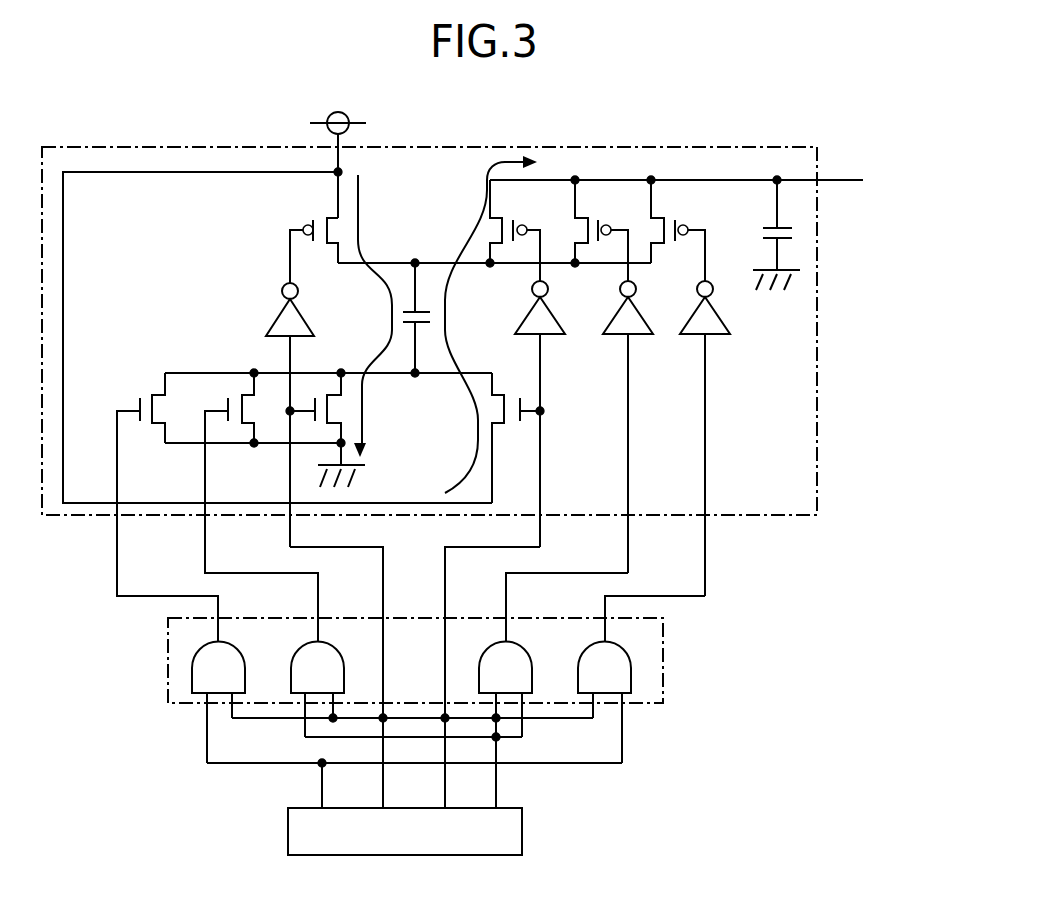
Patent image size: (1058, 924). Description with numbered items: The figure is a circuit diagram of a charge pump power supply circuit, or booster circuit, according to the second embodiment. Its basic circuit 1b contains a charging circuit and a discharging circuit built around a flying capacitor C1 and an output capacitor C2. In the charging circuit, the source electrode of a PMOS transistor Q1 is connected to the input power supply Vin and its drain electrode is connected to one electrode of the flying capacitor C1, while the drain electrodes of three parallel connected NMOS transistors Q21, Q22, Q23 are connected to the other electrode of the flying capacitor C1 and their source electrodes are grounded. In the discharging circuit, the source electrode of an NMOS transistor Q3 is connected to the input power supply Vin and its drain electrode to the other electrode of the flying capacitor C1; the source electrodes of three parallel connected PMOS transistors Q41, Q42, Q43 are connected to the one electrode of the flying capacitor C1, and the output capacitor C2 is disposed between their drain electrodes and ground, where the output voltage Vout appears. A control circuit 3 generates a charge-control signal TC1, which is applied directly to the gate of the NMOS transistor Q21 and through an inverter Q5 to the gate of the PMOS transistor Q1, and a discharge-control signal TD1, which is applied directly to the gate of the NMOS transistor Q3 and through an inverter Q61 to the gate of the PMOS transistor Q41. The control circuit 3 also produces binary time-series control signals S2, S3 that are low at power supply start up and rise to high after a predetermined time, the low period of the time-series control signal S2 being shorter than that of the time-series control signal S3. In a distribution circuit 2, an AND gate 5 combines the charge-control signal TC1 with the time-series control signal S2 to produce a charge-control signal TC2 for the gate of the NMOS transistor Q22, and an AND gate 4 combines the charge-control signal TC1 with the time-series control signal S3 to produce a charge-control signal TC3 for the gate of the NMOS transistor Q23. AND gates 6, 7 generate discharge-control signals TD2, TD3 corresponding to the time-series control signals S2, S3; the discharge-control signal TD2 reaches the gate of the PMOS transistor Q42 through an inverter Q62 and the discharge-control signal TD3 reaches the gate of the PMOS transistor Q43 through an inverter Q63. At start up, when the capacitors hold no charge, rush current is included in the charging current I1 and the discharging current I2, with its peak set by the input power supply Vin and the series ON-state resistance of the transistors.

The basic circuit 1b is at (455, 147).
The distribution circuit 2 is at (663, 651).
The control circuit 3 is at (522, 834).
The AND gate 4 is at (243, 652).
The AND gate 5 is at (344, 652).
The AND gate 6 is at (531, 652).
The AND gate 7 is at (630, 652).
The PMOS transistor Q1 is at (308, 237).
The NMOS transistor Q3 is at (496, 438).
The inverter Q5 is at (276, 415).
The NMOS transistor Q21 is at (338, 430).
The NMOS transistor Q22 is at (249, 507).
The NMOS transistor Q23 is at (160, 507).
The PMOS transistor Q41 is at (515, 230).
The PMOS transistor Q42 is at (601, 230).
The PMOS transistor Q43 is at (678, 230).
The inverter Q61 is at (523, 414).
The inverter Q62 is at (610, 427).
The inverter Q63 is at (688, 438).
The flying capacitor C1 is at (399, 318).
The output capacitor C2 is at (764, 235).
The input power supply Vin is at (338, 147).
The output voltage Vout is at (703, 183).
The charging current I1 is at (373, 316).
The discharging current I2 is at (491, 324).
The charge-control signal TC1 is at (336, 665).
The charge-control signal TC2 is at (230, 561).
The charge-control signal TC3 is at (142, 583).
The discharge-control signal TD1 is at (492, 666).
The discharge-control signal TD2 is at (567, 593).
The discharge-control signal TD3 is at (655, 604).
The time-series control signal S2 is at (470, 786).
The time-series control signal S3 is at (302, 785).